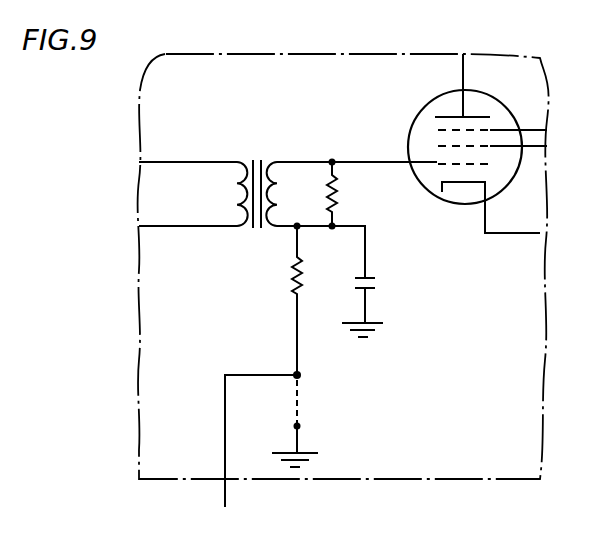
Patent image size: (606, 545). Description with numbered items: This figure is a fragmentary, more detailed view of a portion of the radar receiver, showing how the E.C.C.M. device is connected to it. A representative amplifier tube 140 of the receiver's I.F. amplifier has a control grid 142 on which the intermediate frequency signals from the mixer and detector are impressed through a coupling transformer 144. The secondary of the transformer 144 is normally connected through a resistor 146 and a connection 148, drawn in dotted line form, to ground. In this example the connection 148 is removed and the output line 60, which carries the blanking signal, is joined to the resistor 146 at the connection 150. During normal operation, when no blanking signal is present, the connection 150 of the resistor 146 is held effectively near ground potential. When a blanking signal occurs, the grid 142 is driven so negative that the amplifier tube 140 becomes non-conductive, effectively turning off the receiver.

The output line 60 is at (225, 495).
The amplifier tube 140 is at (506, 106).
The control grid 142 is at (437, 159).
The coupling transformer 144 is at (257, 155).
The resistor 146 is at (291, 280).
The connection 148 is at (299, 403).
The connection 150 is at (301, 375).